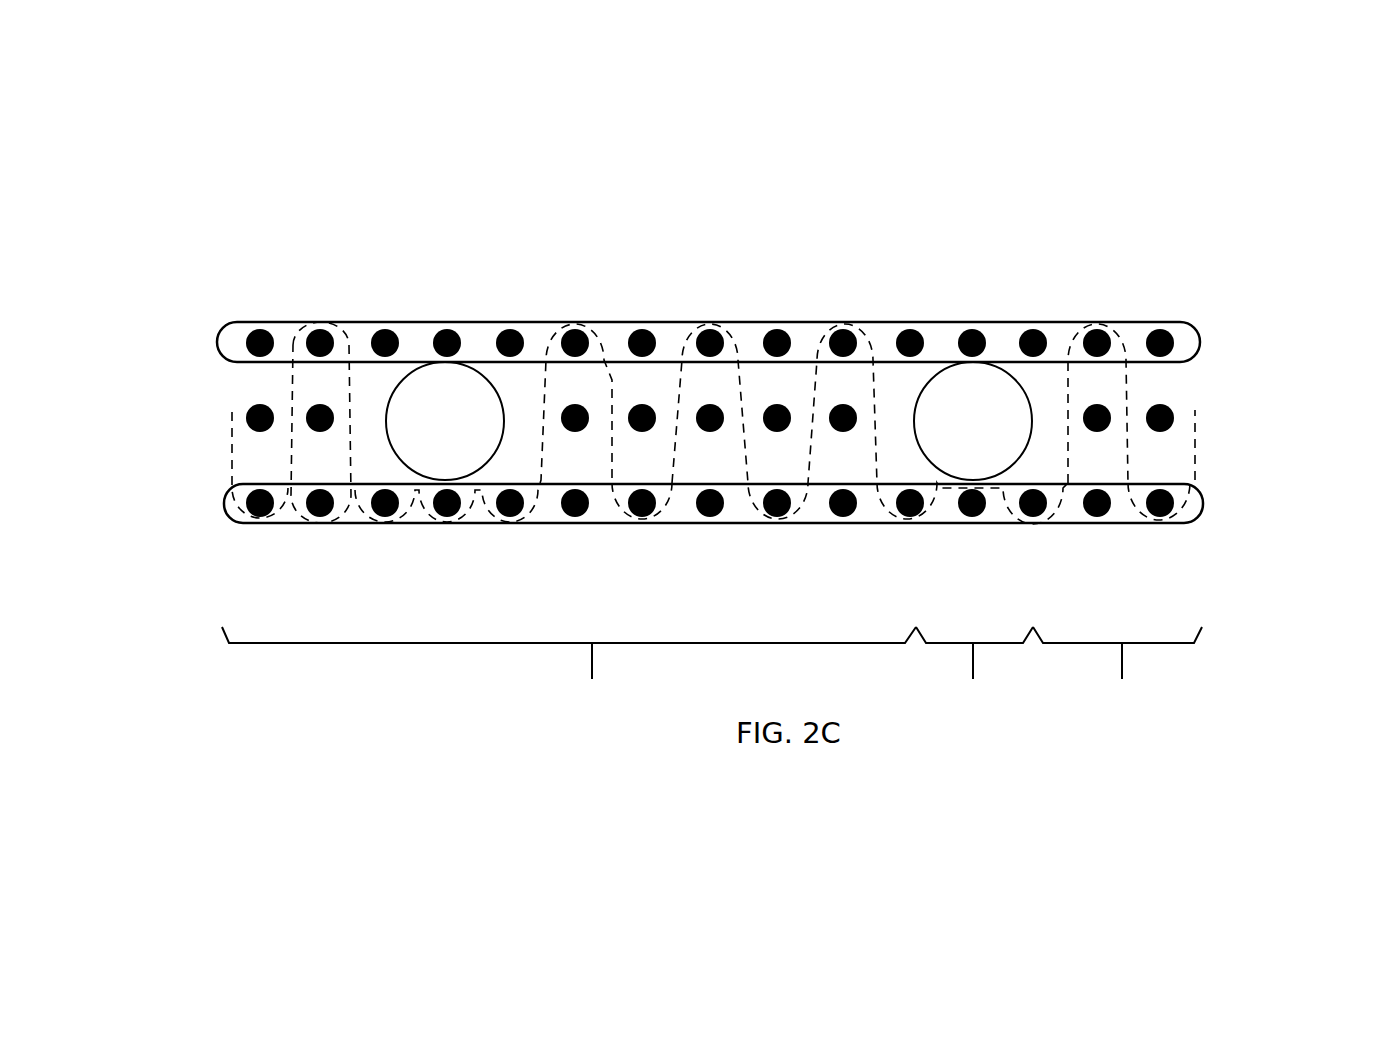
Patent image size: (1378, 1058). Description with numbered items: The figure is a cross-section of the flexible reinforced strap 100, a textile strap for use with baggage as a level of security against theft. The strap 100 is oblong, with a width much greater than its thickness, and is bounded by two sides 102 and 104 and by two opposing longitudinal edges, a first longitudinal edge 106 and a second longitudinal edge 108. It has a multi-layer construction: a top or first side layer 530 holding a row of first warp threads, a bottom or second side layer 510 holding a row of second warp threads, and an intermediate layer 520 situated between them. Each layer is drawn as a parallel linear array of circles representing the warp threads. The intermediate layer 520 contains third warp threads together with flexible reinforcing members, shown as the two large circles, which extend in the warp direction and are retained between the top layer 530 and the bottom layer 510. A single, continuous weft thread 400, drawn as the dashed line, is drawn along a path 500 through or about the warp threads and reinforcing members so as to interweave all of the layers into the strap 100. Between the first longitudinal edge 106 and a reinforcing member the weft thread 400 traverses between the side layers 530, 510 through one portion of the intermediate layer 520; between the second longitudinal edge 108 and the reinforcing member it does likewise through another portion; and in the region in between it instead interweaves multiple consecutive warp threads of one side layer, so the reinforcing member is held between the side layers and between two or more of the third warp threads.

The flexible reinforced strap 100 is at (1265, 265).
The side 102 is at (713, 316).
The side 104 is at (705, 528).
The first longitudinal edge 106 is at (1205, 370).
The second longitudinal edge 108 is at (187, 472).
The weft thread 400 is at (1193, 467).
The path 500 is at (1202, 435).
The bottom layer 510 is at (220, 507).
The intermediate layer 520 is at (223, 430).
The top layer 530 is at (203, 338).